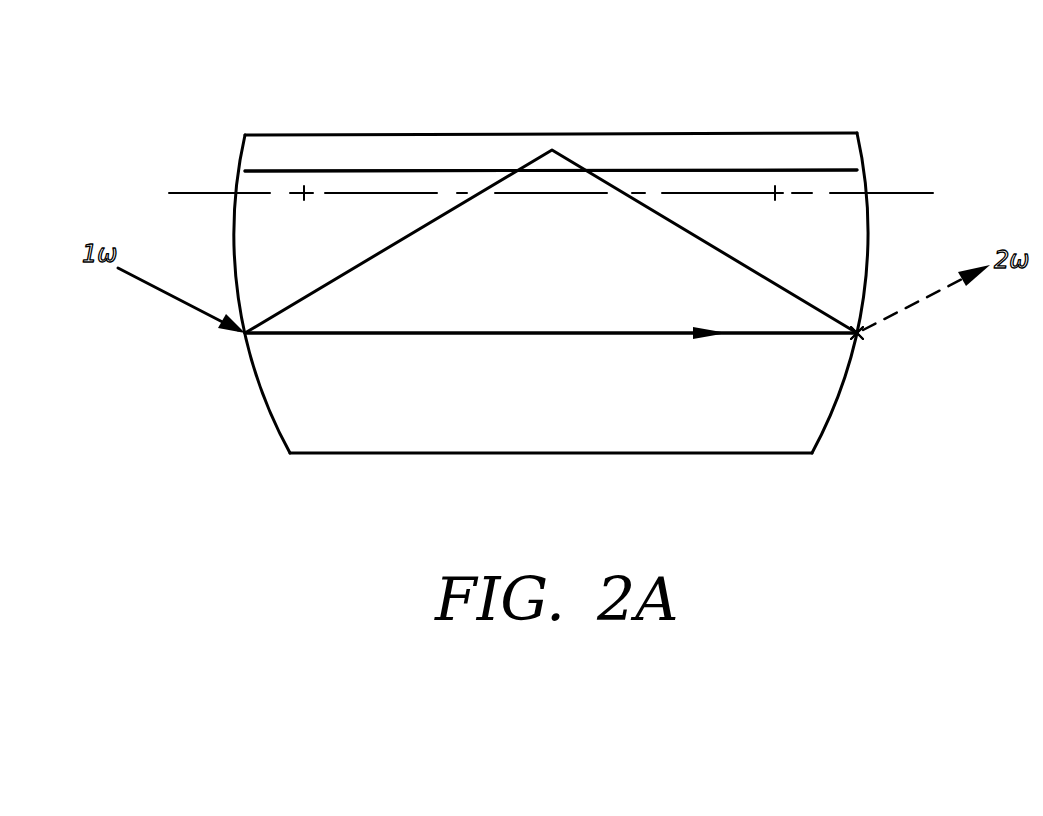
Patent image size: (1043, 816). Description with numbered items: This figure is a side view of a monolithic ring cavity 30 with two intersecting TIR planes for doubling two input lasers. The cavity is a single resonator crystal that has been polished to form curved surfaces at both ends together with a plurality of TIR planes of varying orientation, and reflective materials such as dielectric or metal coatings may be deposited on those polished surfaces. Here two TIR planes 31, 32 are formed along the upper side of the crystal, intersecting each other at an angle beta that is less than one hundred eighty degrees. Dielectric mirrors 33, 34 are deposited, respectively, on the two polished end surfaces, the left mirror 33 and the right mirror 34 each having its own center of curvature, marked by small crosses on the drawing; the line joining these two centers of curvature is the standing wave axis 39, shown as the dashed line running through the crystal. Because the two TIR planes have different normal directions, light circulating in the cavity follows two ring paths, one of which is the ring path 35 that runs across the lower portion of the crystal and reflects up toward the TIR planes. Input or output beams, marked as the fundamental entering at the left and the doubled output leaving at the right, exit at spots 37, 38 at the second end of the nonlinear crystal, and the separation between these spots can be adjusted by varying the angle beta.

The monolithic ring cavity 30 is at (555, 242).
The TIR plane 31 is at (645, 152).
The TIR plane 32 is at (551, 170).
The dielectric mirror 33 is at (257, 385).
The dielectric mirror 34 is at (832, 417).
The ring path 35 is at (575, 335).
The spot 37 is at (860, 335).
The spot 38 is at (857, 333).
The standing wave axis 39 is at (567, 195).